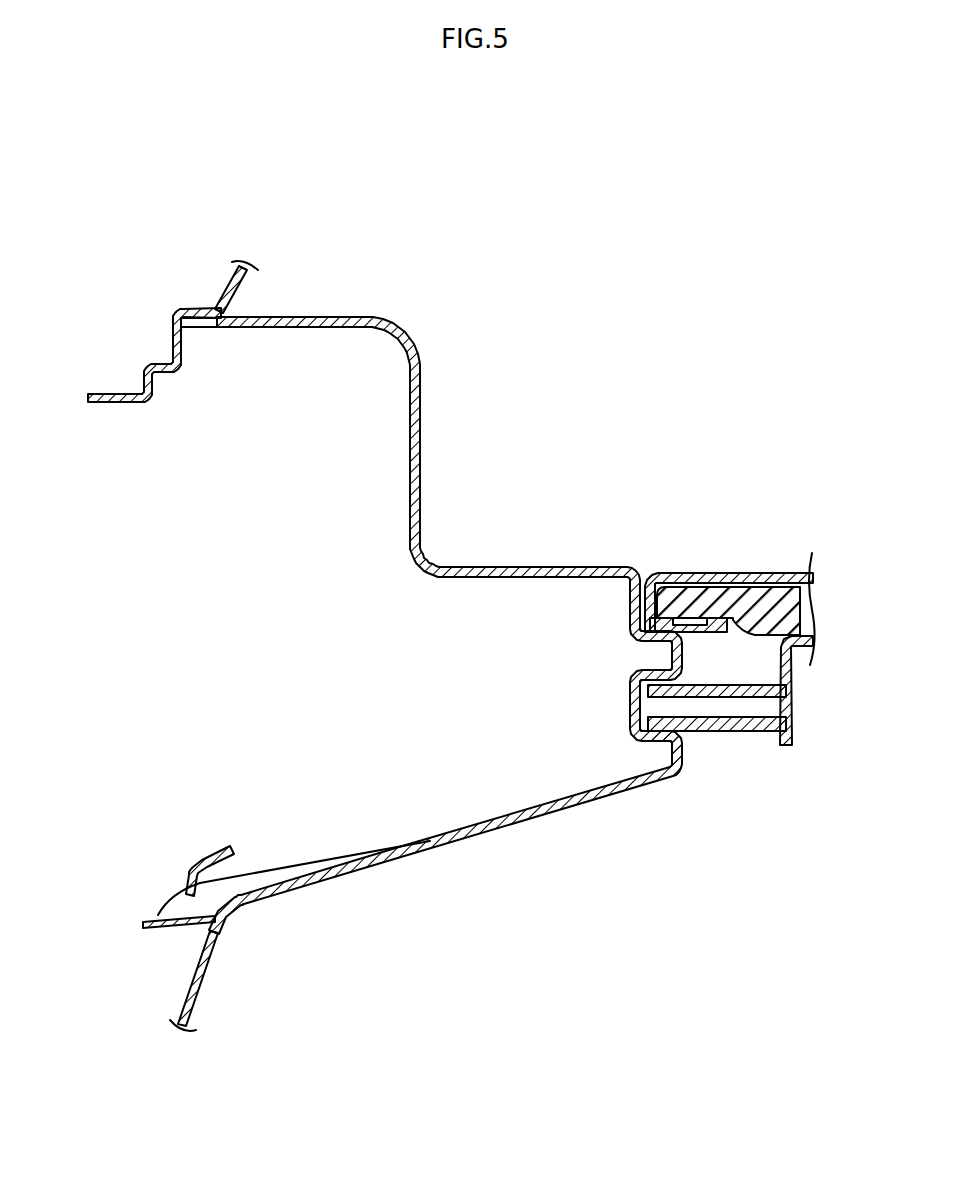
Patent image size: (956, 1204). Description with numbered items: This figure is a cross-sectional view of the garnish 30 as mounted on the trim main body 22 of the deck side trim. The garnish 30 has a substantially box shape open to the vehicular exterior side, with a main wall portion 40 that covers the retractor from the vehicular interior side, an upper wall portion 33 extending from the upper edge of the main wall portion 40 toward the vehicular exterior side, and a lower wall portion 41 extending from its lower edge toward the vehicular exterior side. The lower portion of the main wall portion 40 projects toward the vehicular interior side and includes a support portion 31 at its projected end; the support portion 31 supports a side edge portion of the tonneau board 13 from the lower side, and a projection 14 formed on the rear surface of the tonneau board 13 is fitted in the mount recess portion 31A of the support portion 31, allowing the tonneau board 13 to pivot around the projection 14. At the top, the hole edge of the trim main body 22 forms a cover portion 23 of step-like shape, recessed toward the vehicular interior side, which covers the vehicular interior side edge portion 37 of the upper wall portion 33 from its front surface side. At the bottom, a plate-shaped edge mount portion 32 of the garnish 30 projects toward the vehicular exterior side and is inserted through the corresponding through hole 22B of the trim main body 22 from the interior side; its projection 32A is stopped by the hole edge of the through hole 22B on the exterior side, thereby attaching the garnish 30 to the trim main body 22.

The tonneau board 13 is at (773, 608).
The projection 14 is at (742, 727).
The trim main body 22 is at (163, 362).
The through hole 22B is at (220, 897).
The cover portion 23 is at (204, 312).
The garnish 30 is at (416, 331).
The support portion 31 is at (657, 636).
The mount recess portion 31A is at (672, 715).
The edge mount portion 32 is at (170, 920).
The projection 32A is at (197, 927).
The upper wall portion 33 is at (317, 322).
The edge portion 37 is at (218, 325).
The main wall portion 40 is at (418, 437).
The lower wall portion 41 is at (496, 826).